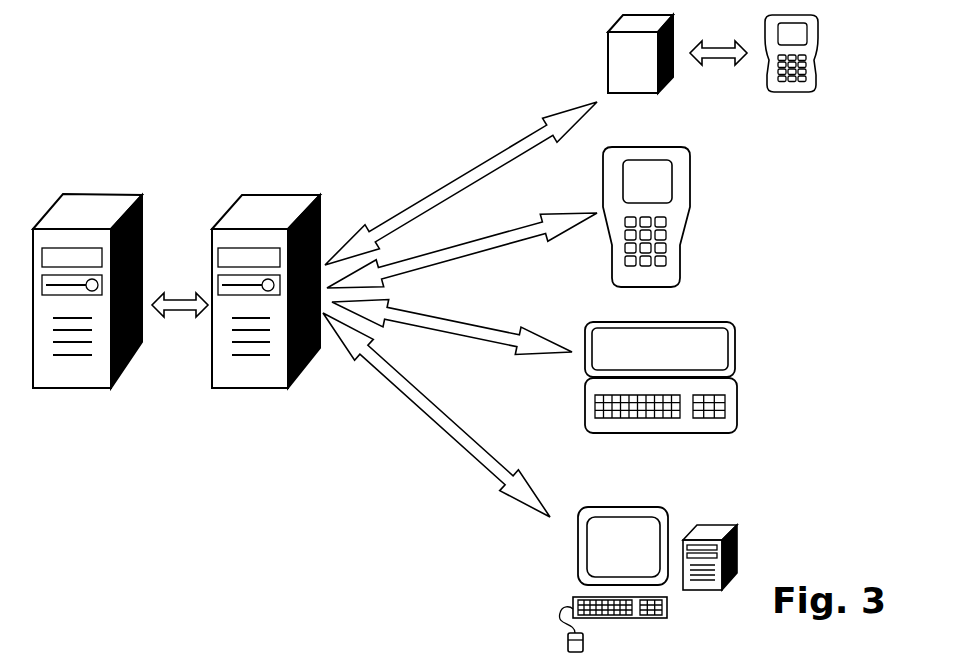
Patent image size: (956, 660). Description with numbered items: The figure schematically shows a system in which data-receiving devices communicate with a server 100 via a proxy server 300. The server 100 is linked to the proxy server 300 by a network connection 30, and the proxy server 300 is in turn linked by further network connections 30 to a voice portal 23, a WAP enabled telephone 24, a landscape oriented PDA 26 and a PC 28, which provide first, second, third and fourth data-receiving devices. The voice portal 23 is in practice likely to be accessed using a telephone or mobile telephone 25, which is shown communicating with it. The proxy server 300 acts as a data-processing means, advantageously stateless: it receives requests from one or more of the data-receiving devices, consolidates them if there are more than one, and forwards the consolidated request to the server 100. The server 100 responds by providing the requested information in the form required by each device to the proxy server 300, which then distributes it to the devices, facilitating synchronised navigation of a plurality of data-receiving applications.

The server 100 is at (120, 193).
The proxy server 300 is at (288, 383).
The network connection 30 is at (158, 318).
The voice portal 23 is at (670, 105).
The WAP enabled telephone 24 is at (692, 184).
The mobile telephone 25 is at (812, 67).
The landscape oriented PDA 26 is at (735, 345).
The PC 28 is at (728, 484).